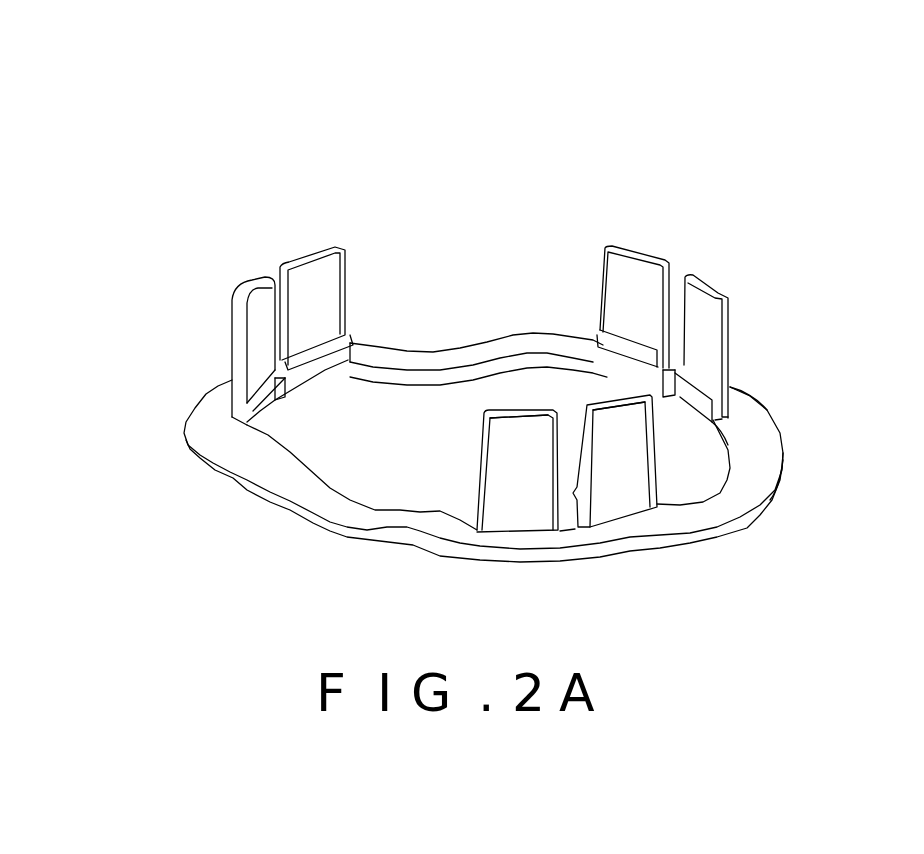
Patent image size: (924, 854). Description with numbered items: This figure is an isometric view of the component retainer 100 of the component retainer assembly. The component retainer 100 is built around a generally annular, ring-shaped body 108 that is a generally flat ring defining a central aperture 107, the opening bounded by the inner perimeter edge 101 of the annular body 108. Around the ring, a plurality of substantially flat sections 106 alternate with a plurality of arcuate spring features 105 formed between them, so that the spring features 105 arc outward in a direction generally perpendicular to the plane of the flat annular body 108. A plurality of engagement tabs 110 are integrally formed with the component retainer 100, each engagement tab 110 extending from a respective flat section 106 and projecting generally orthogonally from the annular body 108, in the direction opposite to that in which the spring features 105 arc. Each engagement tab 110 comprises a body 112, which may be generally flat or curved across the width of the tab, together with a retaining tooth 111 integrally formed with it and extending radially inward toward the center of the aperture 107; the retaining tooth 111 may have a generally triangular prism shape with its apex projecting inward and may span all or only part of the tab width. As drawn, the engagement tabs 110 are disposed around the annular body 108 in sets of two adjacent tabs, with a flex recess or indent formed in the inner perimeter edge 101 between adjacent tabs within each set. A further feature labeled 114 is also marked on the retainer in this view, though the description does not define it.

The component retainer 100 is at (217, 197).
The inner perimeter edge 101 is at (730, 440).
The arcuate spring feature 105 is at (462, 358).
The flat section 106 is at (218, 403).
The central aperture 107 is at (390, 460).
The annular body 108 is at (787, 438).
The engagement tab 110 is at (257, 300).
The retaining tooth 111 is at (280, 378).
The body 112 is at (258, 325).
The notch 114 is at (703, 395).